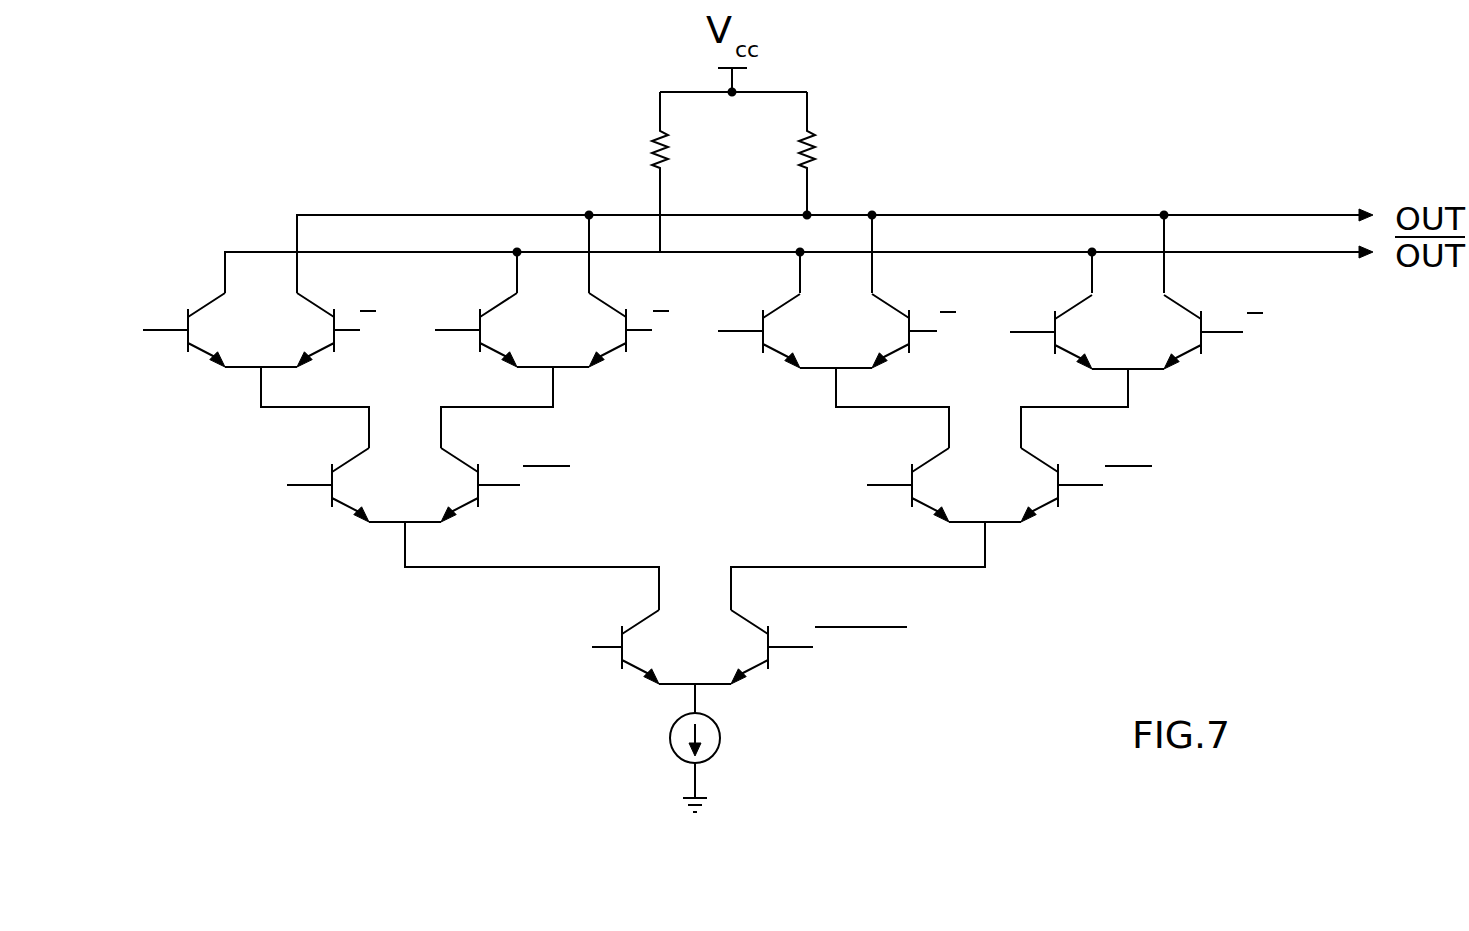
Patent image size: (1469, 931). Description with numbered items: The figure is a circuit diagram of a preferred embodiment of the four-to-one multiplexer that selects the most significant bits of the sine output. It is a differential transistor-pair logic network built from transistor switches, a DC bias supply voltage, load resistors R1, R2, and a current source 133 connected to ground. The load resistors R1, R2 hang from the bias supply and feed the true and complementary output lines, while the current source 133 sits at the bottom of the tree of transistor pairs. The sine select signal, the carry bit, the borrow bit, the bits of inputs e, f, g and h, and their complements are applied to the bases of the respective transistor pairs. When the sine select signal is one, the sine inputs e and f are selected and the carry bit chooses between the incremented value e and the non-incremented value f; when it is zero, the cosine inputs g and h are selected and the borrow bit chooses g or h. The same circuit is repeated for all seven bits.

The current source 133 is at (720, 737).
The load resistor R1 is at (682, 190).
The load resistor R2 is at (829, 171).